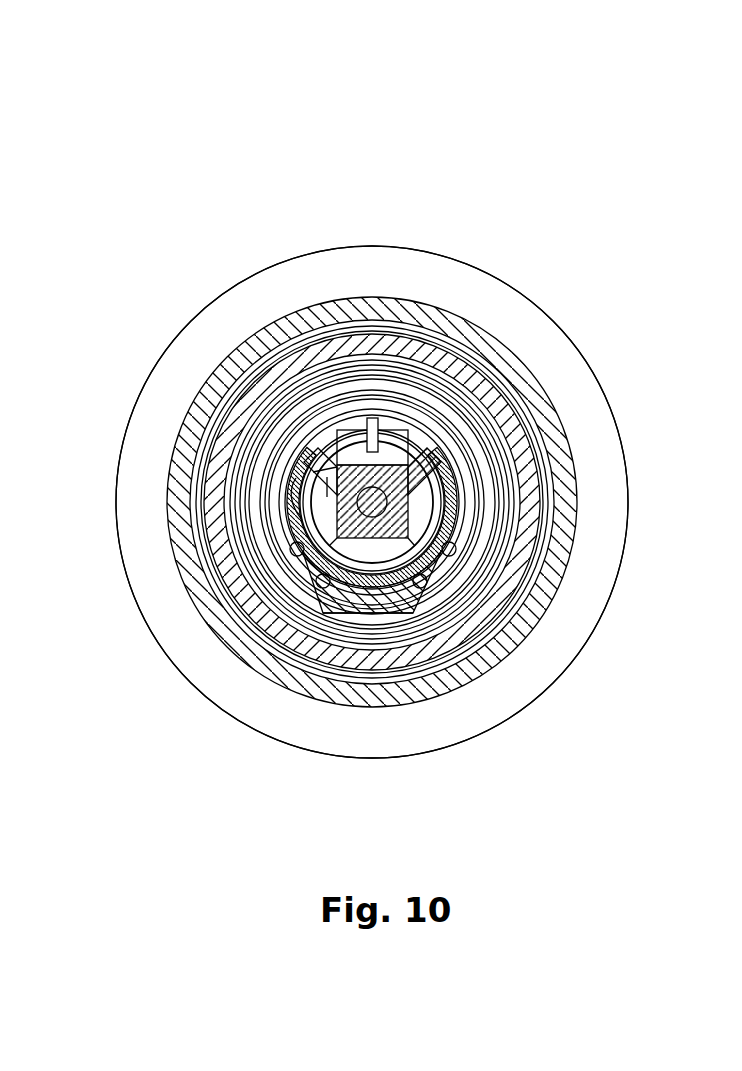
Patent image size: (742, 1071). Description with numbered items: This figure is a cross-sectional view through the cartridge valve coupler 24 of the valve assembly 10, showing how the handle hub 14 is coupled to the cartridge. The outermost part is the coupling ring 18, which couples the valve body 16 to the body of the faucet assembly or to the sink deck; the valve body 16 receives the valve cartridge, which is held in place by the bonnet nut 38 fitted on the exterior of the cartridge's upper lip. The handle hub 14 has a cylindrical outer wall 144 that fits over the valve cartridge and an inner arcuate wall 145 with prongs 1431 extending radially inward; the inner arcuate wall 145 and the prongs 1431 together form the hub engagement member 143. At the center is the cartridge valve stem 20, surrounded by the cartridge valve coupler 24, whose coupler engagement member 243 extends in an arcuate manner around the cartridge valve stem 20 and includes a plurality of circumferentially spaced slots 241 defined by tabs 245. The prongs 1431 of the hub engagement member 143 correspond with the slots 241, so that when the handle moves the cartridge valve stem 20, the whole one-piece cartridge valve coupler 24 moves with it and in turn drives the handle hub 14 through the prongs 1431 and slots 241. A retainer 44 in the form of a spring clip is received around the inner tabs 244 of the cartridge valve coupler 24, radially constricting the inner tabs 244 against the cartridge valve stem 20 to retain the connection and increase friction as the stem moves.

The valve assembly 10 is at (532, 156).
The handle hub 14 is at (229, 566).
The valve body 16 is at (584, 496).
The coupling ring 18 is at (535, 287).
The cartridge valve stem 20 is at (395, 457).
The cartridge valve coupler 24 is at (468, 486).
The bonnet nut 38 is at (372, 405).
The retainer 44 is at (307, 480).
The hub engagement member 143 is at (375, 606).
The cylindrical outer wall 144 is at (532, 530).
The inner arcuate wall 145 is at (403, 597).
The prongs 1431 is at (470, 590).
The slots 241 is at (443, 550).
The coupler engagement member 243 is at (447, 467).
The inner tabs 244 is at (325, 480).
The tabs 245 is at (293, 488).